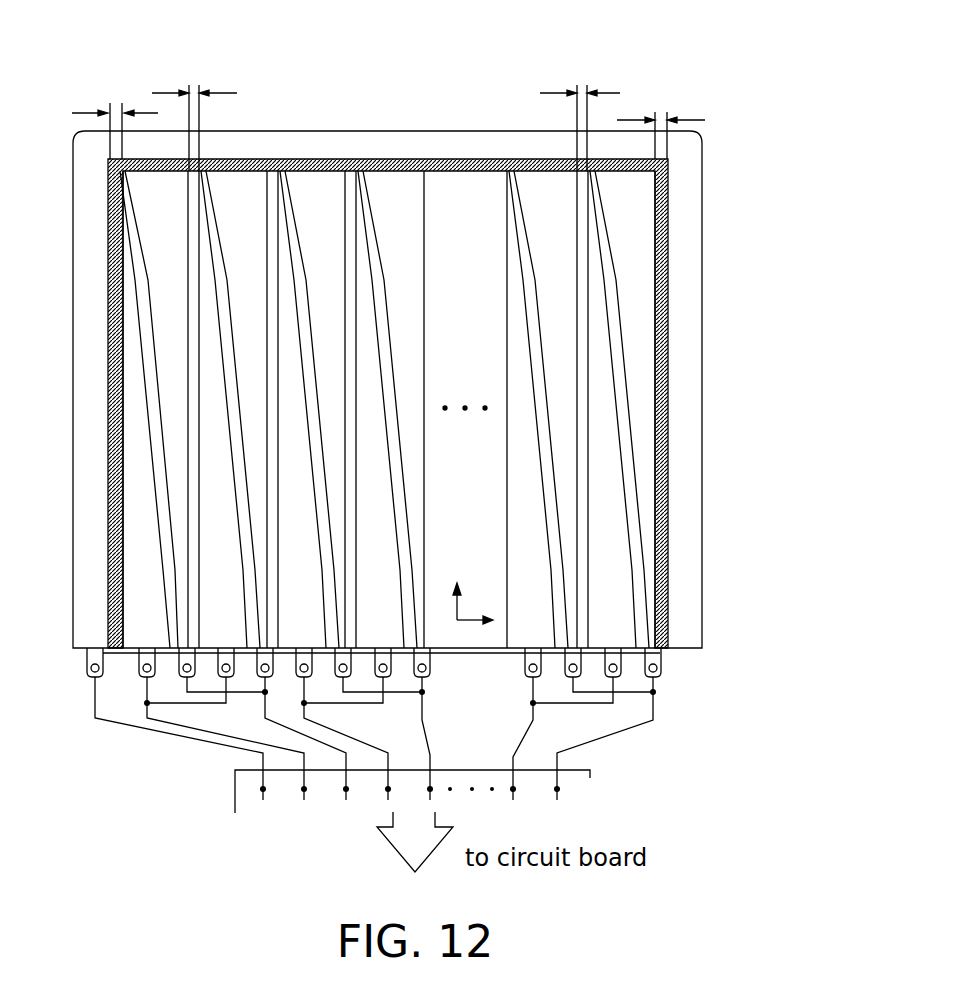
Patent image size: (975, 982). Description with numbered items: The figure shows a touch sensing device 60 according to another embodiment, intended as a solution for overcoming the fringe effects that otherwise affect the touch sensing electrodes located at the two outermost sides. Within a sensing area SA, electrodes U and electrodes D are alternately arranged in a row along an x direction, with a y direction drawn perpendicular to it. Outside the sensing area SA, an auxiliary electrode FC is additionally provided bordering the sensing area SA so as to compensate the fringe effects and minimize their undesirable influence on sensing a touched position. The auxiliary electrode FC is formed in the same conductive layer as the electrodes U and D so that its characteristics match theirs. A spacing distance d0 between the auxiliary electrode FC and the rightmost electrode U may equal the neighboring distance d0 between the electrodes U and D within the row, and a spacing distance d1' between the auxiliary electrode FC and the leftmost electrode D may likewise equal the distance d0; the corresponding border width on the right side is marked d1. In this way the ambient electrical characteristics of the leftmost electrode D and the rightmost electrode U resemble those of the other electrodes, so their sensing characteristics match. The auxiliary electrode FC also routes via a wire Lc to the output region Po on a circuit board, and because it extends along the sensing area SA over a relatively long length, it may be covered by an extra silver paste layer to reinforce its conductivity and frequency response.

The touch sensing device 60 is at (762, 163).
The auxiliary electrode FC is at (72, 501).
The electrode U is at (649, 357).
The electrode D is at (613, 467).
The sensing area SA is at (483, 655).
The wire Lc is at (150, 736).
The output region Po is at (592, 785).
The neighboring distance d0 is at (401, 127).
The right border width d1 is at (674, 135).
The spacing distance d1' is at (97, 131).
The x direction x is at (475, 628).
The y-axis direction y is at (450, 601).